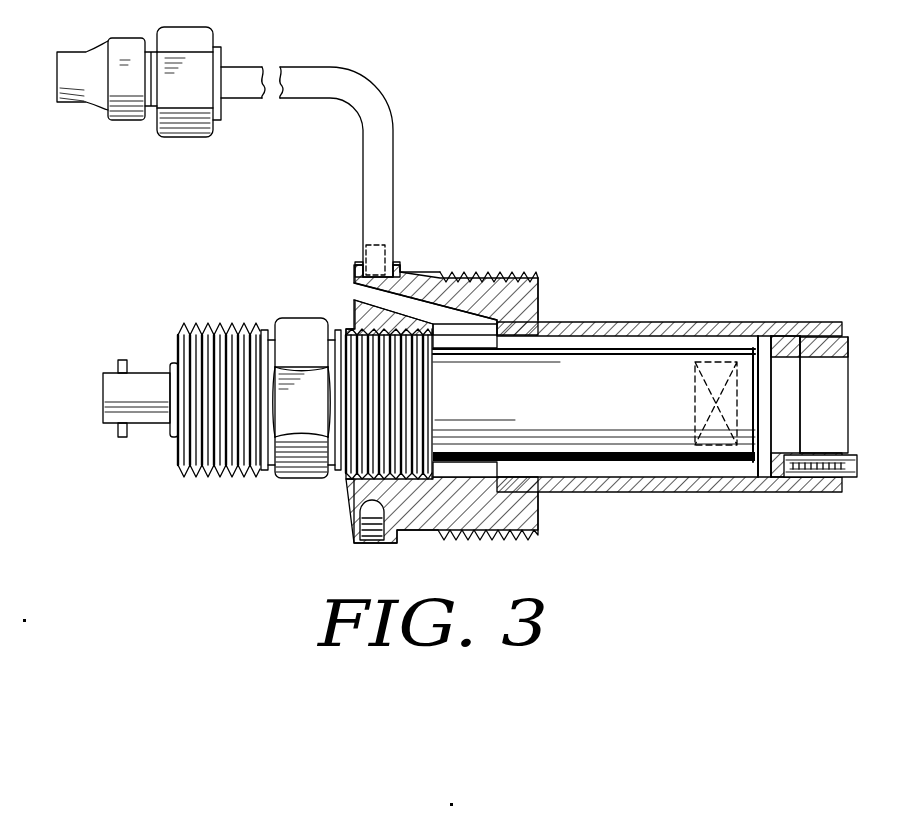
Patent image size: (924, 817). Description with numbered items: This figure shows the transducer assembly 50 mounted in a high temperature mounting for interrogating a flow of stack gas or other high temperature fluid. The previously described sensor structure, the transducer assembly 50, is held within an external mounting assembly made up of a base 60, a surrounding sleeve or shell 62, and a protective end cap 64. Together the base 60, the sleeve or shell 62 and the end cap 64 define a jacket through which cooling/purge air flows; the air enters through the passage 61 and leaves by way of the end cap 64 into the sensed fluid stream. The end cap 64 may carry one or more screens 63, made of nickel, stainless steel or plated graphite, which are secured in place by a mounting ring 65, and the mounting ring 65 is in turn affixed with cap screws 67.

The transducer assembly 50 is at (297, 499).
The base 60 is at (432, 272).
The passage 61 is at (390, 246).
The surrounding sleeve or shell 62 is at (620, 322).
The screens 63 is at (803, 385).
The protective end cap 64 is at (856, 311).
The mounting ring 65 is at (850, 338).
The cap screws 67 is at (848, 478).